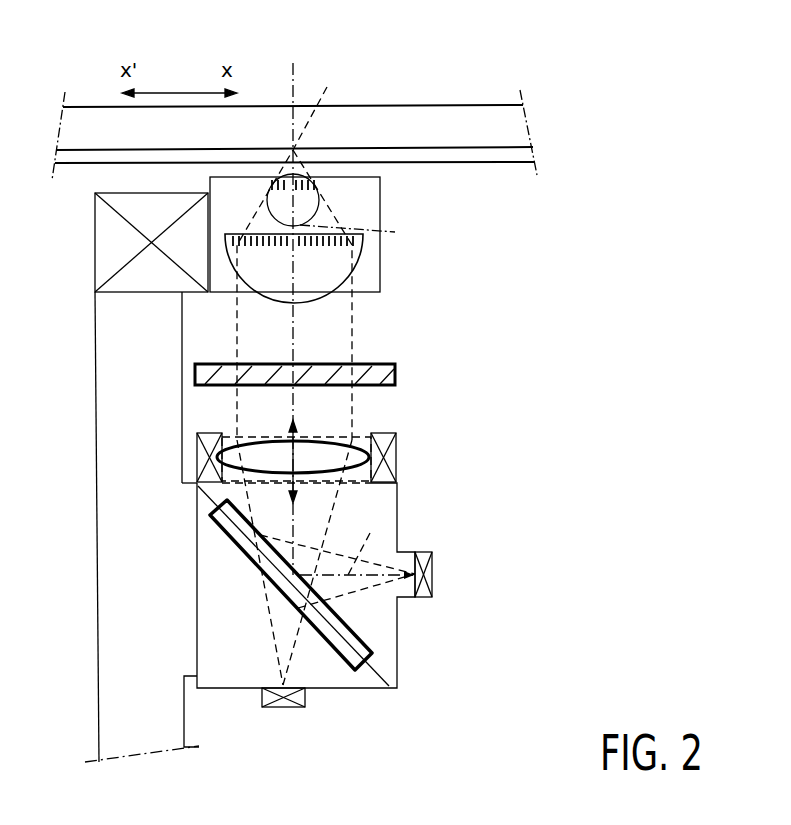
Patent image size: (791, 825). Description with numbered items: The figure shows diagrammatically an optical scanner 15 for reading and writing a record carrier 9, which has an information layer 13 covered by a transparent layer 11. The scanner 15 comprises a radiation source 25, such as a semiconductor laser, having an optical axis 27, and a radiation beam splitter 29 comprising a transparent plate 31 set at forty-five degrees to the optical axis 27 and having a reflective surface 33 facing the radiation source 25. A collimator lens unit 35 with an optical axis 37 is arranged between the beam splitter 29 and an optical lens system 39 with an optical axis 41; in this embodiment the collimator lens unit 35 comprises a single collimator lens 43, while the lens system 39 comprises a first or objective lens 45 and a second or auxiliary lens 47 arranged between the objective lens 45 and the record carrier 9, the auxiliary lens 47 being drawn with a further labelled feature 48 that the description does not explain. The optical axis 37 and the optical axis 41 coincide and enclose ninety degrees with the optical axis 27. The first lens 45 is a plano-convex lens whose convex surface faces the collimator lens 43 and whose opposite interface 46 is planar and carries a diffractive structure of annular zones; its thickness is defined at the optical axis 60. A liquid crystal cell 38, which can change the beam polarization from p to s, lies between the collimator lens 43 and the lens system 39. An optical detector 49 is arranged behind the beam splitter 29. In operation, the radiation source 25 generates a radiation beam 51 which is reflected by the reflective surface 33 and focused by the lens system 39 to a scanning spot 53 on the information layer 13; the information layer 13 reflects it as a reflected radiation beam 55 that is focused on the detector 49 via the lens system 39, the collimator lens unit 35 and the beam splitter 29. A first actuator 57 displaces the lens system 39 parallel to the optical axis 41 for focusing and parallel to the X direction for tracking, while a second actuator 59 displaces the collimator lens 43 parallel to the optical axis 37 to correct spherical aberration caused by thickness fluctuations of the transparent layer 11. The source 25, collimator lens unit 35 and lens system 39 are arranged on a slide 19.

The record carrier 9 is at (294, 115).
The transparent layer 11 is at (515, 163).
The information layer 13 is at (478, 150).
The optical scanner 15 is at (369, 549).
The slide 19 is at (115, 708).
The radiation source 25 is at (434, 583).
The optical axis of the radiation source 27 is at (366, 540).
The radiation beam splitter 29 is at (212, 532).
The transparent plate 31 is at (345, 655).
The reflective surface 33 is at (333, 620).
The collimator lens unit 35 is at (342, 397).
The optical axis of the collimator lens unit 37 is at (296, 458).
The liquid crystal cell 38 is at (396, 374).
The optical lens system 39 is at (381, 248).
The optical axis of the lens system 41 is at (397, 232).
The collimator lens 43 is at (247, 450).
The first lens (objective lens) 45 is at (339, 279).
The interface of the first lens 46 is at (323, 235).
The second lens (auxiliary lens) 47 is at (322, 197).
The aperture of small lens 48 is at (330, 178).
The optical detector 49 is at (283, 708).
The radiation beam 51 is at (385, 550).
The scanning spot 53 is at (294, 249).
The reflected radiation beam 55 is at (265, 617).
The first actuator 57 is at (95, 248).
The second actuator 59 is at (393, 468).
The optical axis 60 is at (290, 77).